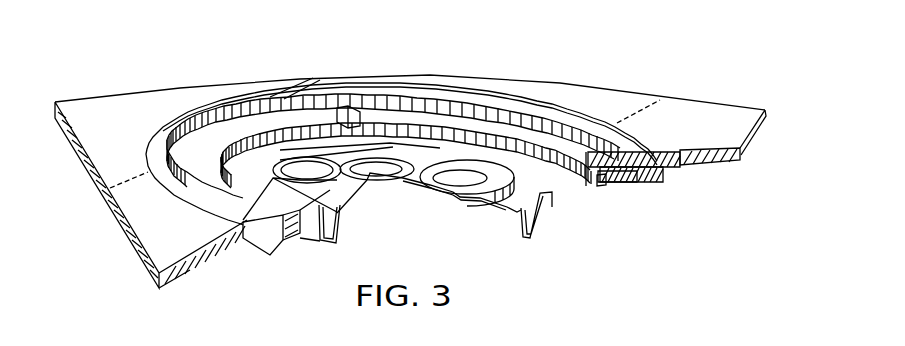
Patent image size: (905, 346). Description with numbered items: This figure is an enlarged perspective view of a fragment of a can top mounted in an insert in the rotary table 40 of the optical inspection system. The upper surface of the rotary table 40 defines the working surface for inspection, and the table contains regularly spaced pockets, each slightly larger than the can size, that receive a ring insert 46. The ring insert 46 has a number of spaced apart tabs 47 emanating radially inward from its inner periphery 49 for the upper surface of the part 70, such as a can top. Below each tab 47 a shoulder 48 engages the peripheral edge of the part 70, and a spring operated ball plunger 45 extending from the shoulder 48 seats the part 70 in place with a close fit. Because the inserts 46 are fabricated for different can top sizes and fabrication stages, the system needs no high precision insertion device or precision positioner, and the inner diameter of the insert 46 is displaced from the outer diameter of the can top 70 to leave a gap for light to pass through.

The rotary table 40 is at (724, 161).
The spring operated ball plunger 45 is at (626, 183).
The ring insert 46 is at (653, 180).
The tab 47 is at (343, 112).
The shoulder 48 is at (602, 186).
The inner periphery 49 is at (205, 143).
The part 70 is at (475, 148).